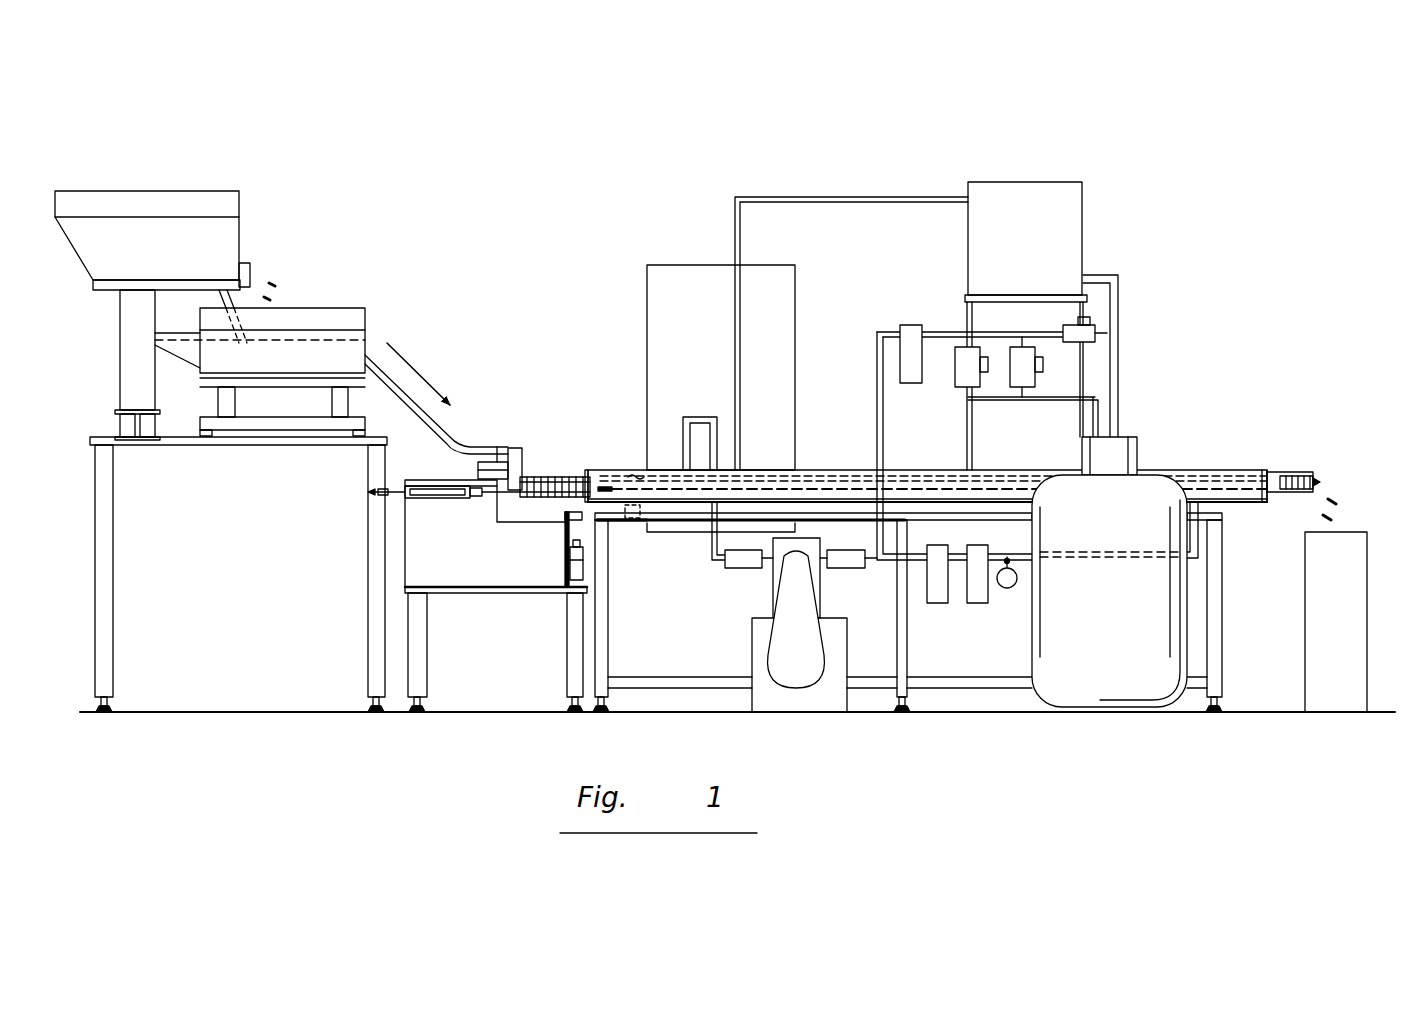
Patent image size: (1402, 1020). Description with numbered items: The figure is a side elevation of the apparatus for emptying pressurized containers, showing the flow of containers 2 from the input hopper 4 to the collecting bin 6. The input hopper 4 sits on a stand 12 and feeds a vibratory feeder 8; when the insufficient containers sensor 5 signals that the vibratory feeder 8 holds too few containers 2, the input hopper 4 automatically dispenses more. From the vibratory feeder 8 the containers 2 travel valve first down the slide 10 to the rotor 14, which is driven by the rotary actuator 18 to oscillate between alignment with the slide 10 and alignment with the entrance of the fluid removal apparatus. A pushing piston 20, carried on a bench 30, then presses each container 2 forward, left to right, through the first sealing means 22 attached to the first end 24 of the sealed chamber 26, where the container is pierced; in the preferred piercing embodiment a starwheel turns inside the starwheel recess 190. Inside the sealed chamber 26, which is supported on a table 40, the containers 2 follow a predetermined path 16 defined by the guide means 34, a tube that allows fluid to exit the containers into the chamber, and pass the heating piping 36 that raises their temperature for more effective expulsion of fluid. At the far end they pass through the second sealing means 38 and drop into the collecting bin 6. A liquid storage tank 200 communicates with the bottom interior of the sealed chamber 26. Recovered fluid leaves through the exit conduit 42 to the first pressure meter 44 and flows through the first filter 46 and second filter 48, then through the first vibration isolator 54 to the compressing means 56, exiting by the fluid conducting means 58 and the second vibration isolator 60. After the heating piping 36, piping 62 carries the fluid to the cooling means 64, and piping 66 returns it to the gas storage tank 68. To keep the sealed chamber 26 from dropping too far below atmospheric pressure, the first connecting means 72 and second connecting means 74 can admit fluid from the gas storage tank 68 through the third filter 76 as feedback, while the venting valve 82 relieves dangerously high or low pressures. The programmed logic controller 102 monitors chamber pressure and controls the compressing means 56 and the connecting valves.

The containers 2 is at (272, 276).
The input hopper 4 is at (145, 200).
The insufficient containers sensor 5 is at (216, 297).
The collecting bin 6 is at (1310, 627).
The vibratory feeder 8 is at (312, 312).
The slide 10 is at (388, 378).
The table 12 is at (100, 545).
The rotor 14 is at (517, 457).
The predetermined path 16 is at (1245, 468).
The rotary actuator 18 is at (498, 447).
The pushing piston 20 is at (440, 480).
The first sealing means 22 is at (528, 505).
The first end 24 is at (600, 517).
The sealed chamber 26 is at (753, 465).
The bench 30 is at (417, 663).
The guide means 34 is at (778, 470).
The heating piping 36 is at (635, 465).
The second sealing means 38 is at (1305, 463).
The support table 40 is at (908, 648).
The exit conduit 42 is at (1198, 538).
The first pressure meter 44 is at (1017, 583).
The first filter 46 is at (982, 590).
The second filter 48 is at (930, 603).
The first vibration isolator 54 is at (832, 568).
The compressing means 56 is at (800, 675).
The fluid conducting means 58 is at (715, 415).
The second vibration isolator 60 is at (745, 568).
The piping 62 is at (893, 197).
The cooling means 64 is at (1068, 165).
The piping 66 is at (1118, 355).
The gas storage tank 68 is at (1100, 683).
The first connecting means 72 is at (1003, 387).
The second connecting means 74 is at (958, 387).
The third filter 76 is at (913, 325).
The venting valve 82 is at (1093, 325).
The programmed logic controller 102 is at (698, 263).
The starwheel recess 190 is at (570, 595).
The liquid storage tank 200 is at (637, 518).